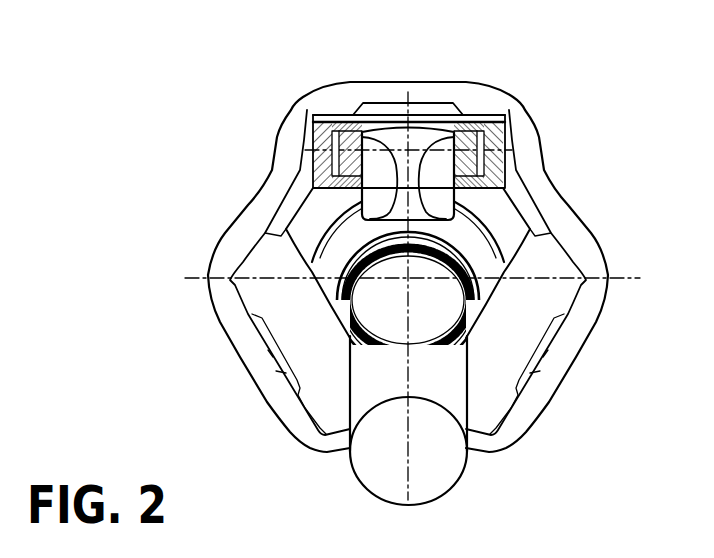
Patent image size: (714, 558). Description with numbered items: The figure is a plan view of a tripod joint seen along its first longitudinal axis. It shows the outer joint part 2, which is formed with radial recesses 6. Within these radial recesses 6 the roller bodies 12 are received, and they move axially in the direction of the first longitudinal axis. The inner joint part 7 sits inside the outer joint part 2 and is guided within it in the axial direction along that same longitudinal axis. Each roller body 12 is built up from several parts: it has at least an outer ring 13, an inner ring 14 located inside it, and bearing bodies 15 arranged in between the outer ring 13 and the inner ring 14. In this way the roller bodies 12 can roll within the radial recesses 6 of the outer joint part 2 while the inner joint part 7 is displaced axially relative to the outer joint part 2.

The outer joint part 2 is at (580, 327).
The radial recess 6 is at (397, 105).
The inner joint part 7 is at (435, 487).
The roller body 12 is at (263, 292).
The outer ring 13 is at (322, 147).
The inner ring 14 is at (477, 120).
The bearing bodies 15 is at (492, 146).